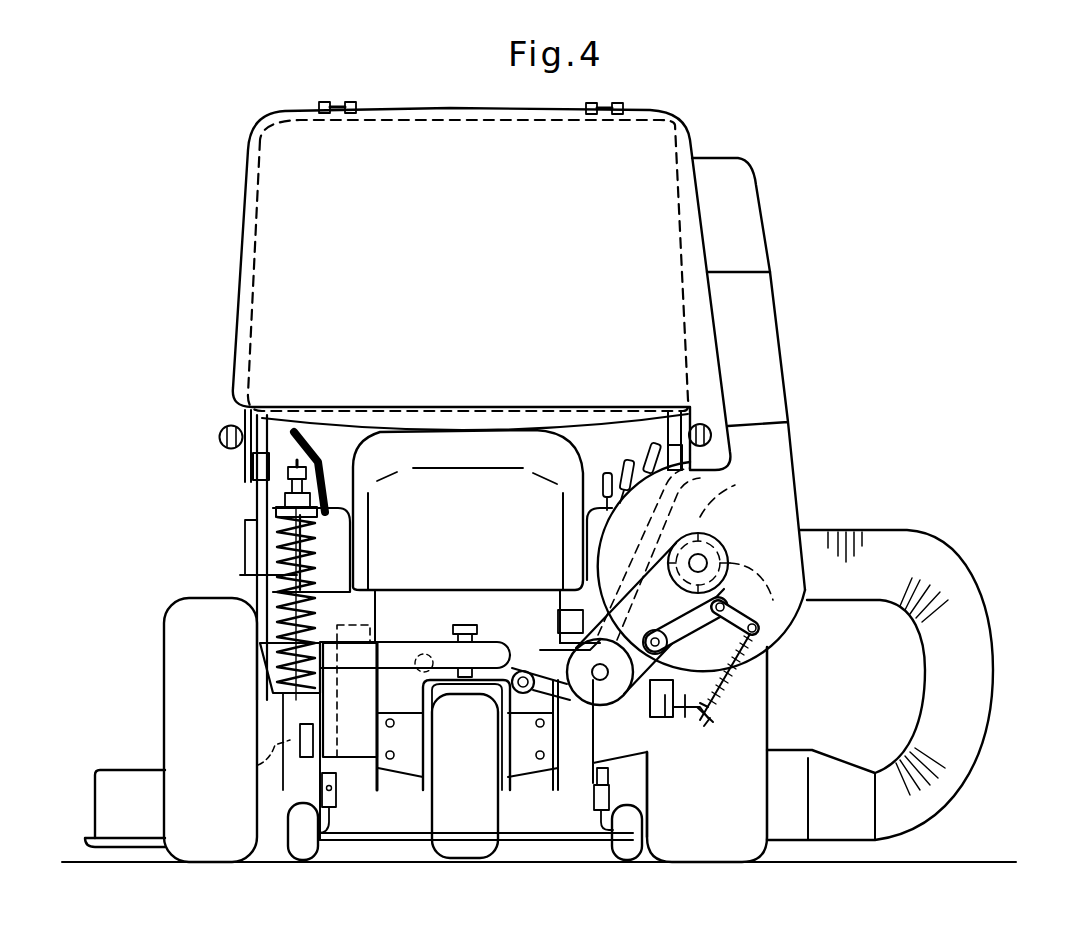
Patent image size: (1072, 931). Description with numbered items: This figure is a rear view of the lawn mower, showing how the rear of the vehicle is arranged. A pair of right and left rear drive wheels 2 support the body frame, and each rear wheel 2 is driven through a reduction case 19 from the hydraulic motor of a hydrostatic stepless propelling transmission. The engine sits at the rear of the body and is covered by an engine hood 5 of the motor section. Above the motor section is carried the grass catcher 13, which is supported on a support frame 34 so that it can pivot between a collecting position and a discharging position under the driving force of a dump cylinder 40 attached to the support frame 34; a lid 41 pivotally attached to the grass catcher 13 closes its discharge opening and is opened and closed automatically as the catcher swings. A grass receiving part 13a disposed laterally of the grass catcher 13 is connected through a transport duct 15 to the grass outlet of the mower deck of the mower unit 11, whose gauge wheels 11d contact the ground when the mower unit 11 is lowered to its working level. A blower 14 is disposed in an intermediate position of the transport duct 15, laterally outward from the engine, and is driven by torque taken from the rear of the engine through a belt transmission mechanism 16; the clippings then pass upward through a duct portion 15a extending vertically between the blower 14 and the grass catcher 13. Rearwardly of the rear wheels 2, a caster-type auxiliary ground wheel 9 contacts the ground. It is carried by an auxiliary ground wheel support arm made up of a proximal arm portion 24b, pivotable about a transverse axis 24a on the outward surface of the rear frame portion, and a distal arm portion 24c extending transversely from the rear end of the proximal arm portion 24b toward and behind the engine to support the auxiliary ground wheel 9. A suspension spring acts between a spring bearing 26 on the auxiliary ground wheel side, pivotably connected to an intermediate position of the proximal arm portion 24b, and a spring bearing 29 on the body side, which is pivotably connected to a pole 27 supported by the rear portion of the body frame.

The rear drive wheels 2 is at (185, 610).
The engine hood 5 is at (388, 433).
The auxiliary ground wheel 9 is at (455, 813).
The mower unit 11 is at (116, 766).
The gauge wheels 11d is at (300, 837).
The grass catcher 13 is at (243, 197).
The grass receiving part 13a is at (747, 230).
The blower 14 is at (770, 525).
The transport duct 15 is at (975, 682).
The duct portion 15a is at (760, 343).
The belt transmission mechanism 16 is at (530, 634).
The reduction case 19 is at (360, 772).
The transverse axis 24a is at (262, 755).
The proximal arm portion 24b is at (345, 703).
The distal arm portion 24c is at (403, 657).
The spring bearing 26 is at (277, 718).
The pole 27 is at (258, 595).
The spring bearing 29 is at (302, 505).
The support frame 34 is at (252, 470).
The dump cylinder 40 is at (219, 436).
The lid 41 is at (275, 282).